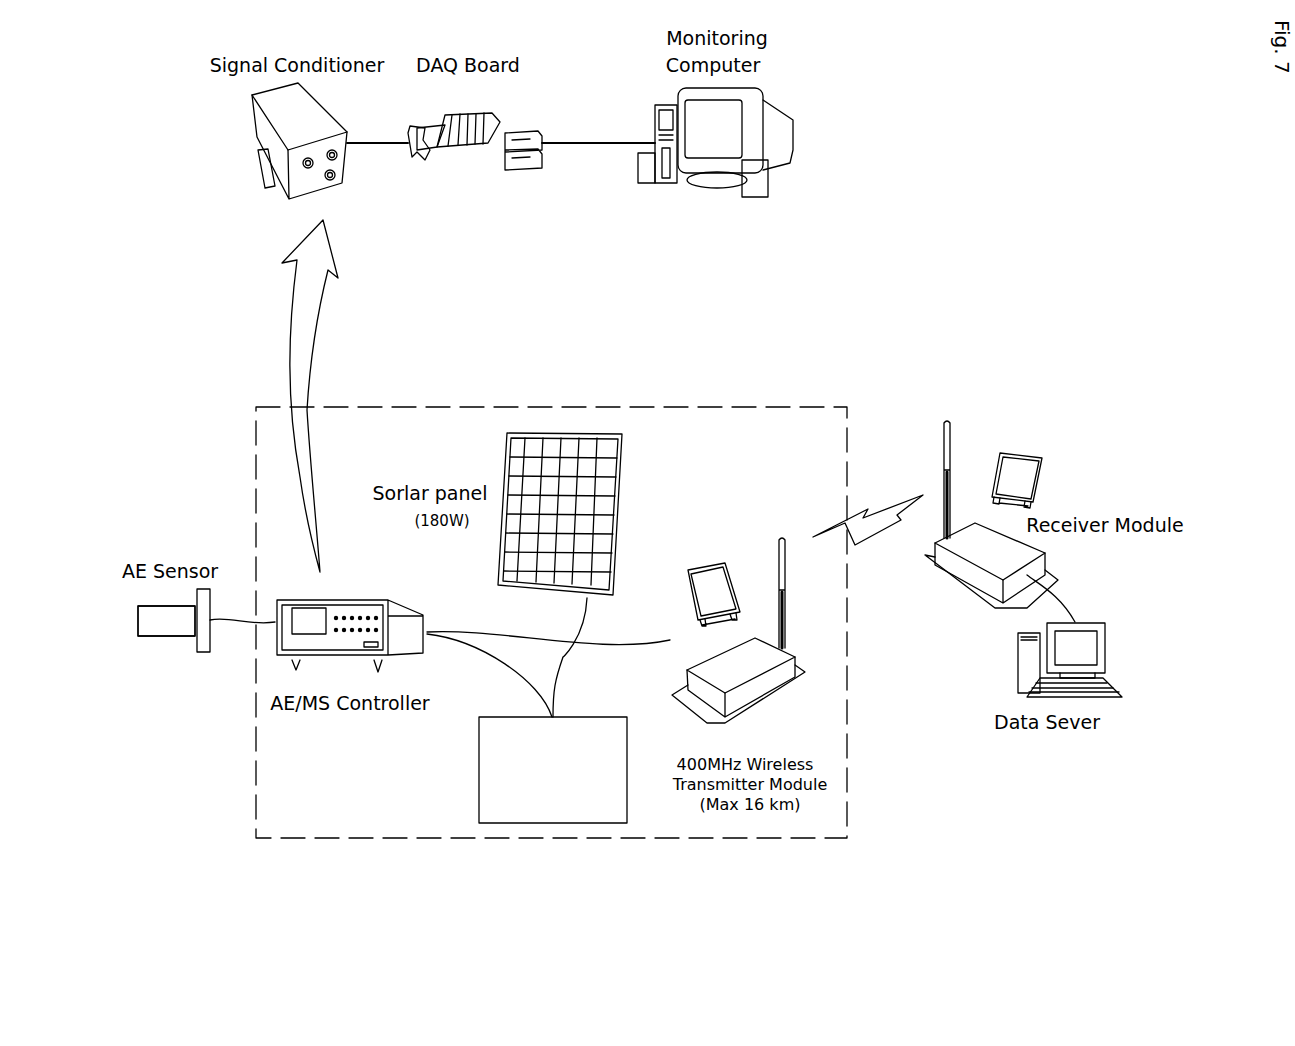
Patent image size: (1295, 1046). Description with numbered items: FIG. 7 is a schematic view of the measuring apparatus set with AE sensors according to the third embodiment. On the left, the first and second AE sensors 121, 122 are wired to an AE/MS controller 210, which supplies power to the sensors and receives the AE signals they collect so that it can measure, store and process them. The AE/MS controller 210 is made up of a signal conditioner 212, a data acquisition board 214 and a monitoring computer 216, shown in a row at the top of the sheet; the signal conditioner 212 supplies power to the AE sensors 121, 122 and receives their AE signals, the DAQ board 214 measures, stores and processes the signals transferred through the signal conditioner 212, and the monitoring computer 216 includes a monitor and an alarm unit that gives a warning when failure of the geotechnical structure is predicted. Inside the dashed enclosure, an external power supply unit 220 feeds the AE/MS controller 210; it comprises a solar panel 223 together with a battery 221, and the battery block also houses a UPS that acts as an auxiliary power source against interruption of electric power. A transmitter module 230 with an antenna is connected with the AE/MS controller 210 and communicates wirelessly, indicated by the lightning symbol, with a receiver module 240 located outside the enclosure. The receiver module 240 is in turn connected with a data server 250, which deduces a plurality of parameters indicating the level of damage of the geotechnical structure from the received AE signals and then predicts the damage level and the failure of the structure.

The first AE sensor 121 is at (165, 637).
The second AE sensor 122 is at (166, 621).
The AE/MS controller 210 is at (296, 598).
The signal conditioner 212 is at (273, 158).
The data acquisition (DAQ) board 214 is at (434, 150).
The monitoring computer 216 is at (777, 135).
The external power supply unit 220 is at (720, 308).
The battery 221 is at (603, 716).
The solar panel 223 is at (565, 427).
The transmitter module 230 is at (792, 695).
The receiver module 240 is at (1055, 502).
The data server 250 is at (1113, 660).